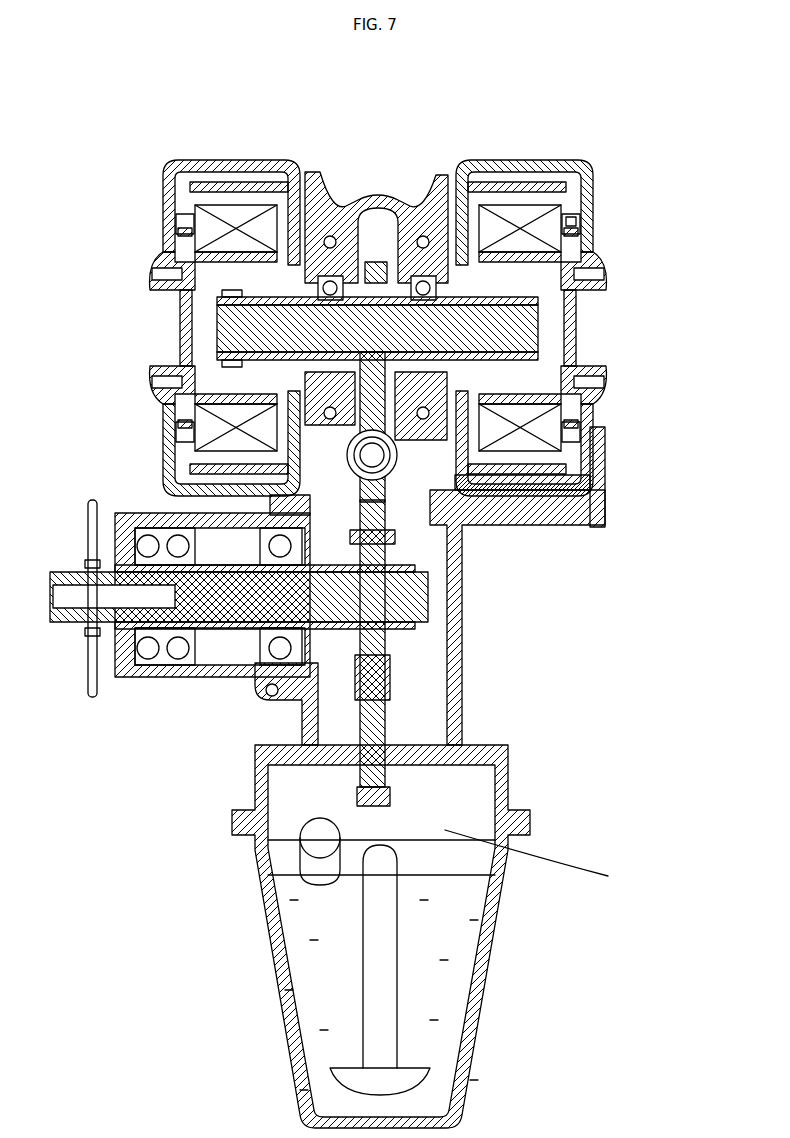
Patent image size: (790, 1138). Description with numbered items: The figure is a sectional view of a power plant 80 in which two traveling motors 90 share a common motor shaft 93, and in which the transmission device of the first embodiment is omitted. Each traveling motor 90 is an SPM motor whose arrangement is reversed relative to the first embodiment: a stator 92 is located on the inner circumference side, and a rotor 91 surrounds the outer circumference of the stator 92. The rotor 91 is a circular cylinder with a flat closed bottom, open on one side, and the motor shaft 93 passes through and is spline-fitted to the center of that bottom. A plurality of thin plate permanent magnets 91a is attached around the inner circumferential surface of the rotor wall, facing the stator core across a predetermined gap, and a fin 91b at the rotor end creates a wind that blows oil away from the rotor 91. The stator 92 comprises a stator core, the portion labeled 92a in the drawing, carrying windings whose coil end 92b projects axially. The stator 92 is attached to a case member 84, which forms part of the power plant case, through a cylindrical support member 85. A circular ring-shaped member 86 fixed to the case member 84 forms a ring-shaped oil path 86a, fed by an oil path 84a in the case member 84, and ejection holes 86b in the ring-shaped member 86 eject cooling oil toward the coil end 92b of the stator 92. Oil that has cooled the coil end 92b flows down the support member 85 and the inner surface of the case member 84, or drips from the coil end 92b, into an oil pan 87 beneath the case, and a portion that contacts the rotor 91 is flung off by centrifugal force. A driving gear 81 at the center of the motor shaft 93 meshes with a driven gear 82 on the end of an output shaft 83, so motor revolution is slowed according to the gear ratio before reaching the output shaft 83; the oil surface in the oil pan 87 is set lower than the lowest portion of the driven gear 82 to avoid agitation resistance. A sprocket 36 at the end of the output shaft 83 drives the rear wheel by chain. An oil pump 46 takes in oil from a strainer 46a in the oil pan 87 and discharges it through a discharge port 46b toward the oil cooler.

The sprocket 36 is at (90, 670).
The oil pump 46 is at (480, 790).
The strainer 46a is at (390, 1000).
The discharge port 46b is at (325, 900).
The power plant 80 is at (600, 165).
The driving gear 81 is at (378, 265).
The driven gear 82 is at (385, 690).
The output shaft 83 is at (430, 595).
The case member 84 is at (180, 330).
The oil path 84a is at (600, 490).
The support member 85 is at (248, 298).
The circular ring-shaped member 86 is at (180, 220).
The oil path 86a is at (578, 218).
The ejection holes 86b is at (552, 215).
The oil pan 87 is at (500, 930).
The traveling motor 90 is at (236, 160).
The rotor 91 is at (458, 200).
The permanent magnet 91a is at (250, 190).
The fin 91b is at (185, 195).
The stator 92 is at (225, 208).
The bobbin 92a is at (230, 215).
The coil end 92b is at (205, 232).
The motor shaft 93 is at (538, 330).